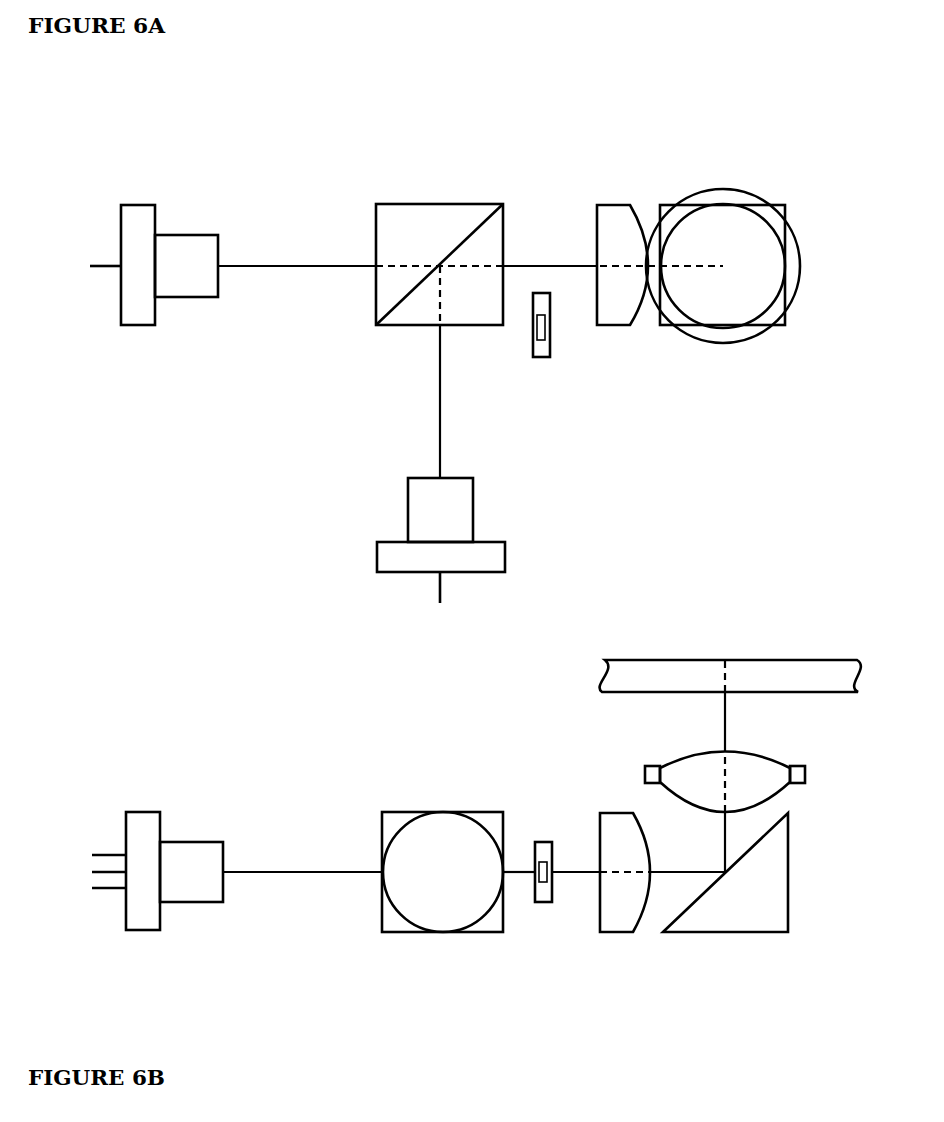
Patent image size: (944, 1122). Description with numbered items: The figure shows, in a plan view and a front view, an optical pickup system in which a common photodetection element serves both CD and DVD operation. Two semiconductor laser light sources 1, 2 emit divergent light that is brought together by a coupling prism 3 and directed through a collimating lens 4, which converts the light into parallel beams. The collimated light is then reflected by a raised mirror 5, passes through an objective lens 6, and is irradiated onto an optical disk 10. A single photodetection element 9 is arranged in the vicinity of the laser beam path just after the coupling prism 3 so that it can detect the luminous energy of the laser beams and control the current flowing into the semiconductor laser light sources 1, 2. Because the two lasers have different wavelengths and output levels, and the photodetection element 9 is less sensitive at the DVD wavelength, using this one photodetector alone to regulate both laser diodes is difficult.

In FIG. 6A, the semiconductor laser light source 1 is at (140, 325).
In FIG. 6B, the semiconductor laser light source 1 is at (140, 930).
In FIG. 6A, the semiconductor laser light source 2 is at (505, 557).
In FIG. 6B, the semiconductor laser light source 2 is at (425, 905).
In FIG. 6A, the coupling prism 3 is at (420, 204).
In FIG. 6B, the coupling prism 3 is at (400, 812).
In FIG. 6A, the collimating lens 4 is at (610, 205).
In FIG. 6B, the collimating lens 4 is at (612, 932).
In FIG. 6A, the raised mirror 5 is at (785, 317).
In FIG. 6B, the raised mirror 5 is at (788, 920).
In FIG. 6A, the objective lens 6 is at (785, 280).
In FIG. 6B, the objective lens 6 is at (805, 775).
In FIG. 6A, the photodetection element 9 is at (550, 345).
In FIG. 6B, the photodetection element 9 is at (542, 842).
In FIG. 6B, the optical disk 10 is at (807, 660).